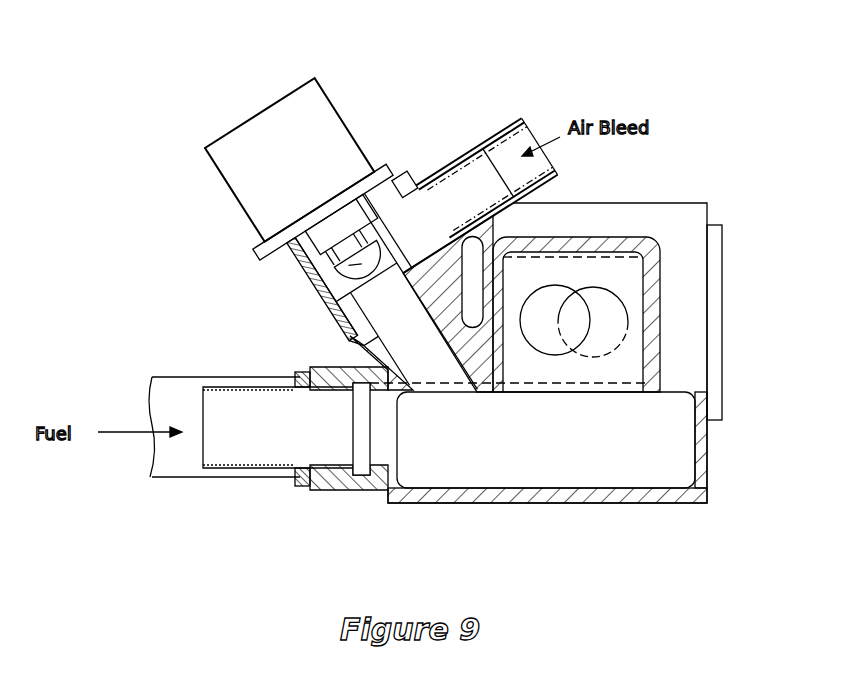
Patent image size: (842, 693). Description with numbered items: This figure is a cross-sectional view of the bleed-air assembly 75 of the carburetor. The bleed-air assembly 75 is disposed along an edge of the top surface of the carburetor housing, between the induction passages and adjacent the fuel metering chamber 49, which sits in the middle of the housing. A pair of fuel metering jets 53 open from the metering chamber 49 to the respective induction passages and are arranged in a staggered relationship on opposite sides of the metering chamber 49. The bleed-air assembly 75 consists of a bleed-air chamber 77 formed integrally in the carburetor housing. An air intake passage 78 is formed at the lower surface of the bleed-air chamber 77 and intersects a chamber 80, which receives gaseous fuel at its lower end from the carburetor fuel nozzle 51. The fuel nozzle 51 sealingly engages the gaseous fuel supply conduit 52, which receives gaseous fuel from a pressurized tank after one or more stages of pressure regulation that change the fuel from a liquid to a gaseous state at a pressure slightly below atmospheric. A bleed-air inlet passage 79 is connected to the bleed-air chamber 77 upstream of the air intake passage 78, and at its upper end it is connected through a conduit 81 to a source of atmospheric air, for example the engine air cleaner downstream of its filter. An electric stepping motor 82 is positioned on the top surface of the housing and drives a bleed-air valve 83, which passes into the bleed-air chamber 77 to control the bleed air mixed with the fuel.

The bleed-air assembly 75 is at (186, 74).
The electric stepping motor 82 is at (200, 163).
The bleed-air valve 83 is at (353, 278).
The bleed-air chamber 77 is at (310, 304).
The air intake passage 78 is at (330, 308).
The bleed-air inlet passage 79 is at (455, 175).
The conduit 81 is at (483, 140).
The fuel metering jets 53 is at (553, 290).
The fuel metering chamber 49 is at (642, 290).
The chamber 80 is at (574, 483).
The gaseous fuel supply conduit 52 is at (172, 375).
The fuel nozzle 51 is at (256, 470).